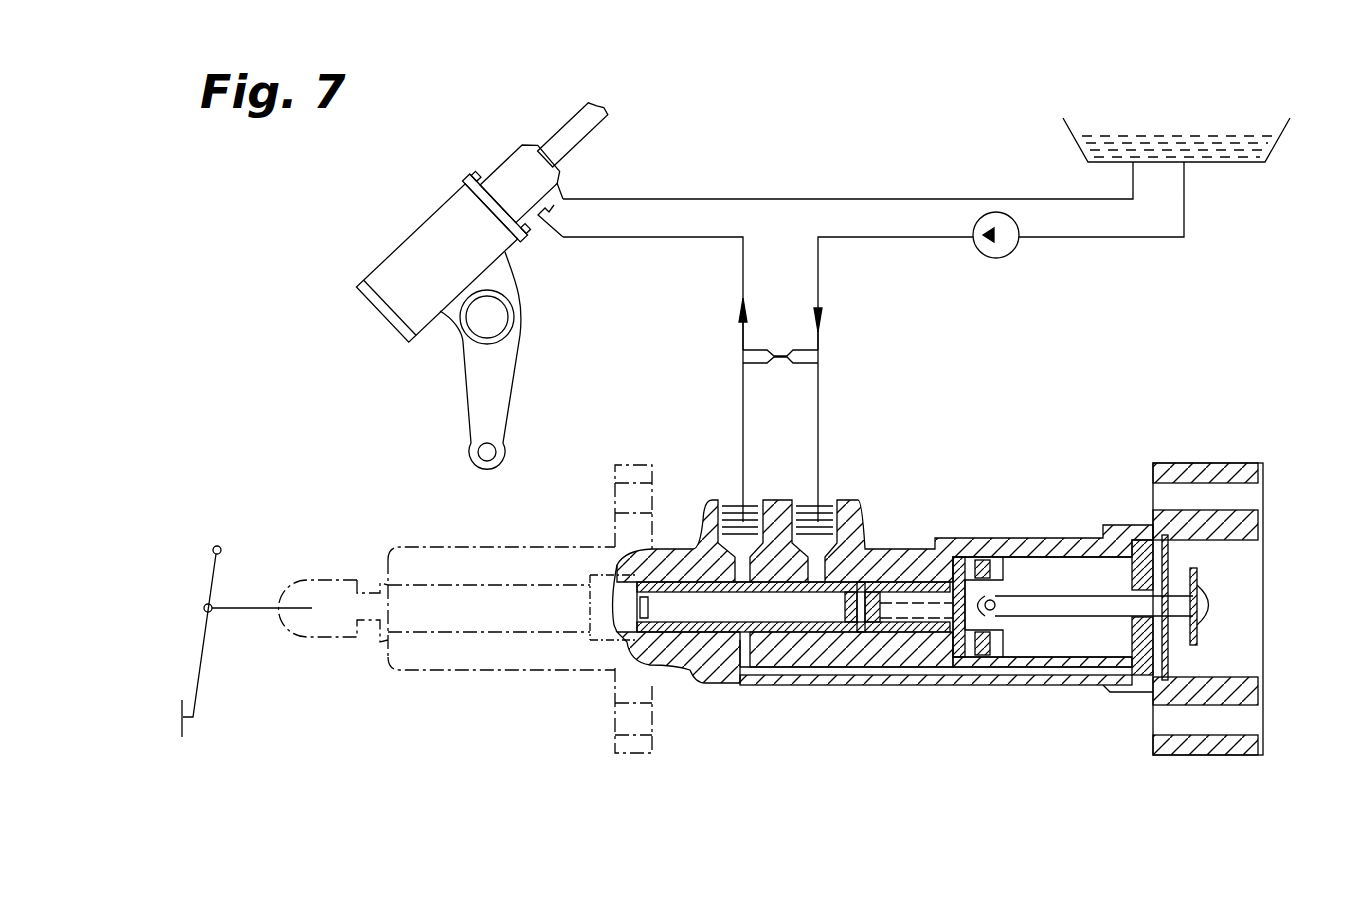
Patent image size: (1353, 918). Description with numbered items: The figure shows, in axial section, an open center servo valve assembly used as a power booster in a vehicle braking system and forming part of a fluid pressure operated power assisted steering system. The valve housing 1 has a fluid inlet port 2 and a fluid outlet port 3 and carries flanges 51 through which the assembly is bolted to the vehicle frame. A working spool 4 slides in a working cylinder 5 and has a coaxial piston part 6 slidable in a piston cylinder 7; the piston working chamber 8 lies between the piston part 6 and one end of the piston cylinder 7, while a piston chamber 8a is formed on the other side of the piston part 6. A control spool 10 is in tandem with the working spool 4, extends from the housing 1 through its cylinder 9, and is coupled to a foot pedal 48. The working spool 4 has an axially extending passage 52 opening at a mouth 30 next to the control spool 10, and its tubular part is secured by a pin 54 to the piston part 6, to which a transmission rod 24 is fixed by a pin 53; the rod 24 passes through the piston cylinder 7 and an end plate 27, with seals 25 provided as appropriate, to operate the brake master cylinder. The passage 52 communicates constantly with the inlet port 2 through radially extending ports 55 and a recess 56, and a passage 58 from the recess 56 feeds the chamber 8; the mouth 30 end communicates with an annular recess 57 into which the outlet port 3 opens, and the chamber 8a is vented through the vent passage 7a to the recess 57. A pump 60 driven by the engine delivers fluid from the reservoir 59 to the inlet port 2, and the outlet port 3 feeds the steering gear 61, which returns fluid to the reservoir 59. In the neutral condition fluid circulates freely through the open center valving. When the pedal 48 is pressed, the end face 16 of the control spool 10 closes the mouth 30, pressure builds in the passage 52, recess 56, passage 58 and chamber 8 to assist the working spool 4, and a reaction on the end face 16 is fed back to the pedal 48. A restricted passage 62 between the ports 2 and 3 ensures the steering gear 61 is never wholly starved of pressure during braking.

The valve housing 1 is at (462, 547).
The fluid inlet port 2 is at (832, 504).
The fluid outlet port 3 is at (733, 505).
The working spool 4 is at (812, 650).
The working cylinder 5 is at (903, 630).
The piston part 6 is at (1002, 572).
The piston cylinder 7 is at (1067, 652).
The vent passage 7a is at (830, 670).
The piston working chamber 8 is at (963, 558).
The piston chamber 8a is at (1067, 567).
The cylinder 9 is at (465, 628).
The control spool 10 is at (383, 585).
The end face 16 is at (632, 608).
The transmission rod 24 is at (1212, 610).
The seals 25 is at (983, 657).
The end plate 27 is at (1168, 556).
The mouth 30 is at (706, 611).
The foot pedal 48 is at (200, 640).
The flanges 51 is at (650, 753).
The axially extending passage 52 is at (707, 640).
The pin 53 is at (1008, 613).
The pin 54 is at (858, 632).
The radially extending ports 55 is at (793, 615).
The recess 56 is at (880, 578).
The annular recess 57 is at (680, 578).
The passage 58 is at (935, 575).
The hydraulic fluid reservoir 59 is at (1262, 150).
The pump 60 is at (993, 257).
The power assisted steering gear 61 is at (388, 233).
The restricted passage 62 is at (758, 350).